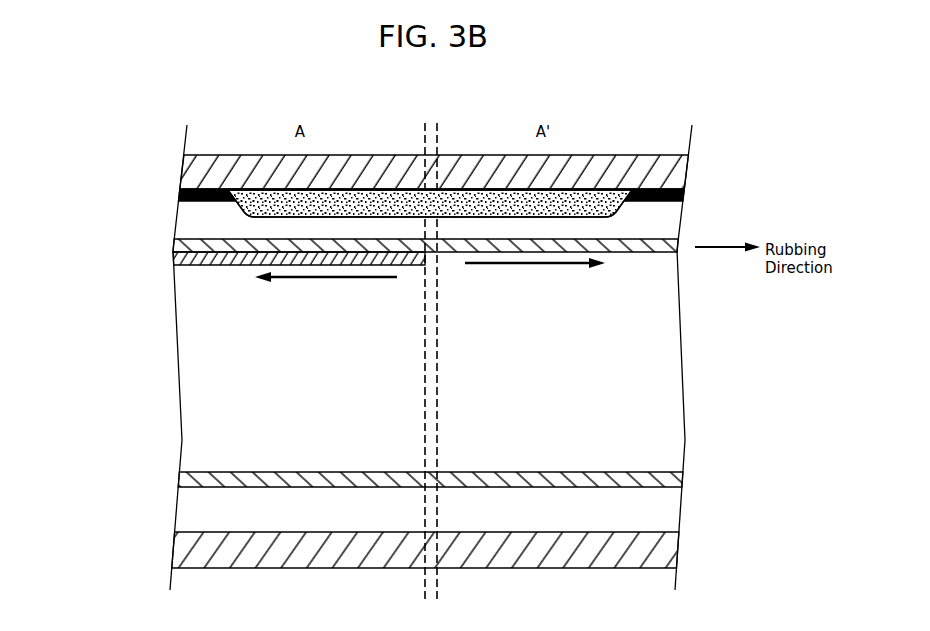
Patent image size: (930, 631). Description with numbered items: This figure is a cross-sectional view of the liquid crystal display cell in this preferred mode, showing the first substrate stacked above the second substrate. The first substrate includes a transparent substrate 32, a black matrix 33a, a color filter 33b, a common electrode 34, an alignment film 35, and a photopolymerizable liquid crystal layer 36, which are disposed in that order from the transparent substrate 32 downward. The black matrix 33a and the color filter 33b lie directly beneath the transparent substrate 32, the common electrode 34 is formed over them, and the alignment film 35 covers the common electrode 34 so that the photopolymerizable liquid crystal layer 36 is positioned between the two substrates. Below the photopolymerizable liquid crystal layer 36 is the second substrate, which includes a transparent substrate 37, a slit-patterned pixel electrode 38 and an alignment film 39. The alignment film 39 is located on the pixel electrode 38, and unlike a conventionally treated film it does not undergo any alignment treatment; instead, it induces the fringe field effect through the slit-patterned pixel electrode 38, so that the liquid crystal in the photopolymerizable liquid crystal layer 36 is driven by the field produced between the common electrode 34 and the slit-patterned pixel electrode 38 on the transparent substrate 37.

The transparent substrate 32 is at (190, 173).
The black matrix 33a is at (179, 195).
The color filter 33b is at (230, 205).
The common electrode 34 is at (178, 246).
The alignment film 35 is at (177, 257).
The photopolymerizable liquid crystal layer 36 is at (222, 265).
The transparent substrate 37 is at (187, 552).
The slit-patterned pixel electrode 38 is at (193, 510).
The alignment film 39 is at (186, 478).